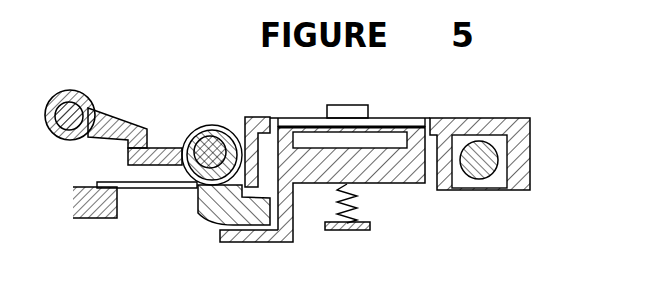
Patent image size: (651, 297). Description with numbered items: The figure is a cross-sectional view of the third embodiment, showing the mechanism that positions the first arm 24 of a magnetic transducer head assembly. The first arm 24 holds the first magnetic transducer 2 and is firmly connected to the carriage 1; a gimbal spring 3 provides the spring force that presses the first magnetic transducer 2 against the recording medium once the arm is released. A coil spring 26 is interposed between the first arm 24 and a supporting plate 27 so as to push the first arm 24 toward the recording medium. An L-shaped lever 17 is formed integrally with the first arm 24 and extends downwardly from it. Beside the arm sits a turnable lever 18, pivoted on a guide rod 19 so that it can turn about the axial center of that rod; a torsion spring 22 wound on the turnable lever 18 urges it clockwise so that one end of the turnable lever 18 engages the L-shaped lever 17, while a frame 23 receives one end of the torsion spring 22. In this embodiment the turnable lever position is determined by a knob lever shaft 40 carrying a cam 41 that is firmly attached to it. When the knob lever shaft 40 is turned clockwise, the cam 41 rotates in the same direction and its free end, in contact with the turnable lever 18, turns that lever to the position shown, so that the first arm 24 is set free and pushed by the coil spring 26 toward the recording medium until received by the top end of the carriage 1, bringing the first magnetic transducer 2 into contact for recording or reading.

The carriage 1 is at (470, 118).
The first magnetic transducer 2 is at (345, 105).
The gimbal spring 3 is at (388, 126).
The L-shaped lever 17 is at (296, 234).
The turnable lever 18 is at (200, 216).
The guide rod 19 is at (212, 152).
The torsion spring 22 is at (138, 190).
The frame 23 is at (96, 196).
The first arm 24 is at (402, 185).
The coil spring 26 is at (357, 200).
The supporting plate 27 is at (352, 232).
The knob lever shaft 40 is at (73, 106).
The cam 41 is at (103, 128).